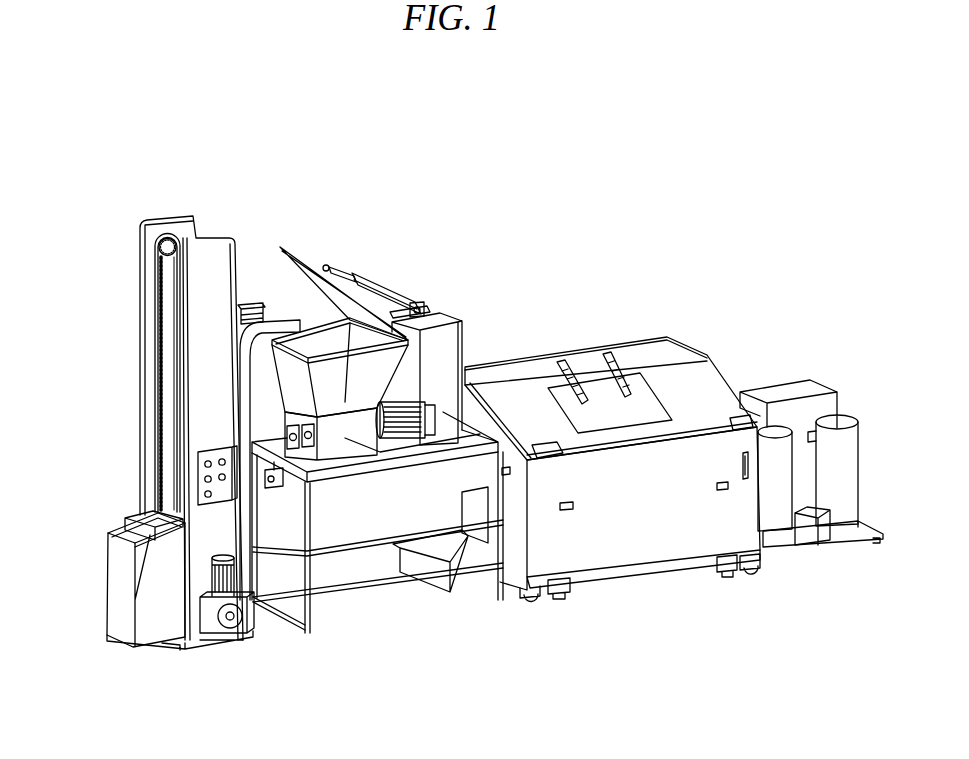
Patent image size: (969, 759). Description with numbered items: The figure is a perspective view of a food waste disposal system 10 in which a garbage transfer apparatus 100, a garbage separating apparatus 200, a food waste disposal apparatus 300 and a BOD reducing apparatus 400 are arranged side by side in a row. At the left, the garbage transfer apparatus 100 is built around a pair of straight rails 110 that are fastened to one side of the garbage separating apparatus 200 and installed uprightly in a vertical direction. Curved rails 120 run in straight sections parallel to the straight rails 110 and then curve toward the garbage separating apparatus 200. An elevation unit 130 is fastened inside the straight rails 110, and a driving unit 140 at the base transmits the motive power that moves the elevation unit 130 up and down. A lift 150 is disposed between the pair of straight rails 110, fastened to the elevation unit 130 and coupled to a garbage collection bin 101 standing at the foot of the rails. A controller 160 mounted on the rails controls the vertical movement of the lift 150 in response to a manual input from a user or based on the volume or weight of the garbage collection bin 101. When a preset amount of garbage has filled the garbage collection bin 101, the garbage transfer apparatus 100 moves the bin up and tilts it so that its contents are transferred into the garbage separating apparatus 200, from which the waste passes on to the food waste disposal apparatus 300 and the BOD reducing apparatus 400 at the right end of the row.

The food waste disposal system 10 is at (650, 128).
The garbage transfer apparatus 100 is at (176, 208).
The garbage collection bin 101 is at (115, 552).
The pair of straight rails 110 is at (195, 222).
The curved rails 120 is at (247, 307).
The elevation unit 130 is at (160, 334).
The driving unit 140 is at (250, 607).
The lift 150 is at (140, 522).
The controller 160 is at (216, 456).
The garbage separating apparatus 200 is at (375, 258).
The food waste disposal apparatus 300 is at (613, 320).
The BOD reducing apparatus 400 is at (798, 357).